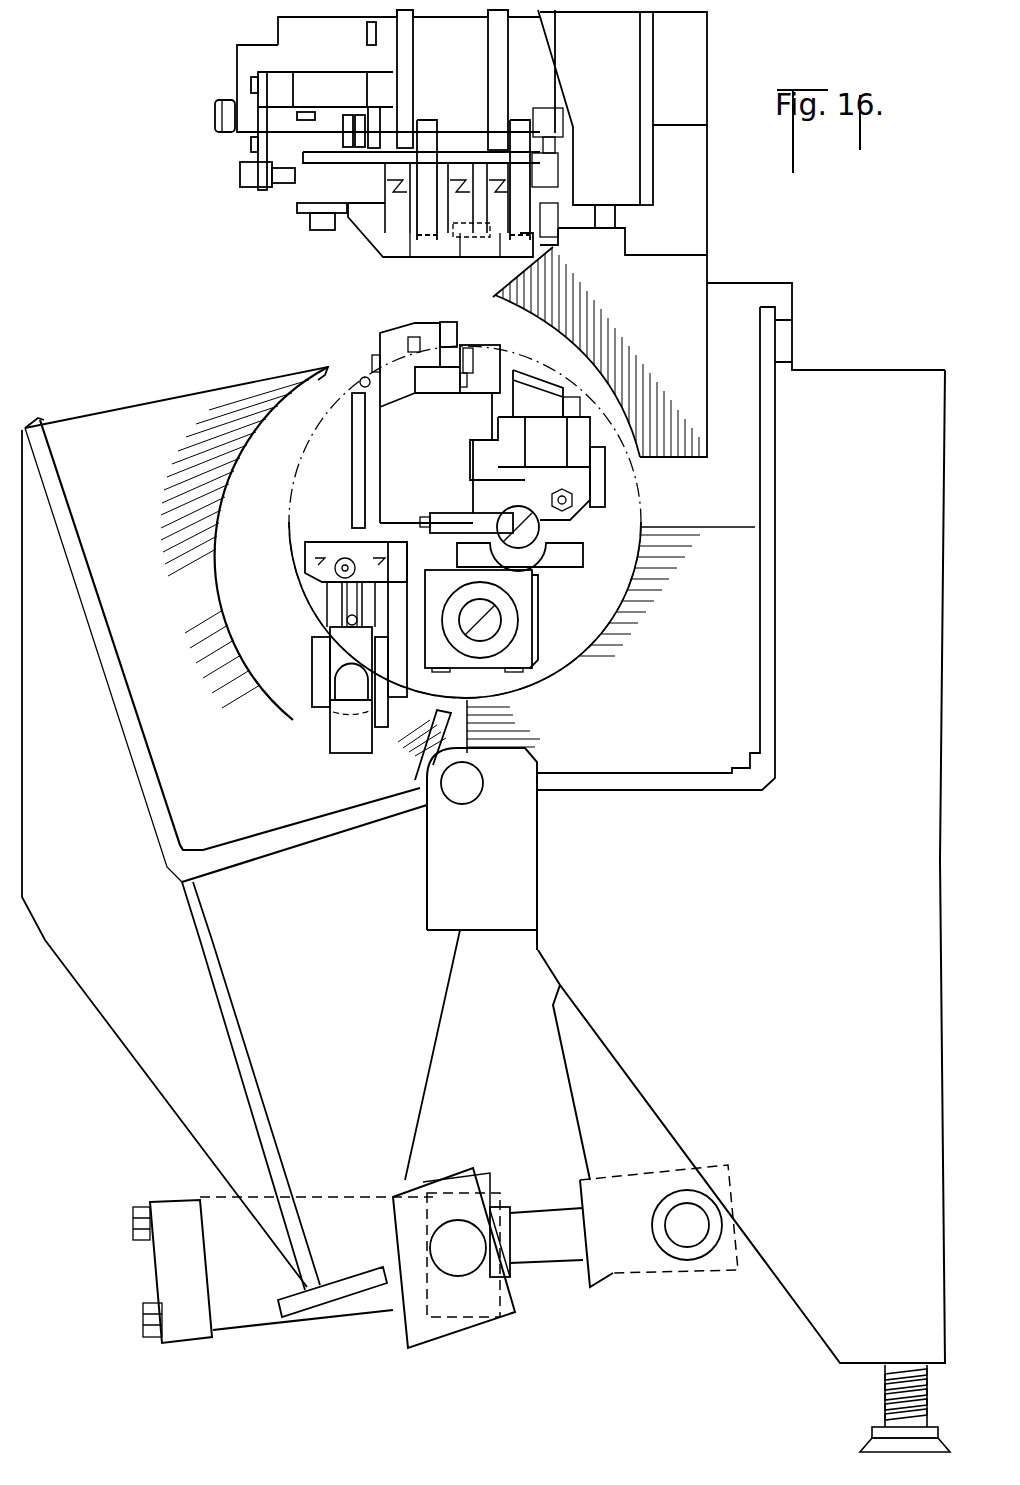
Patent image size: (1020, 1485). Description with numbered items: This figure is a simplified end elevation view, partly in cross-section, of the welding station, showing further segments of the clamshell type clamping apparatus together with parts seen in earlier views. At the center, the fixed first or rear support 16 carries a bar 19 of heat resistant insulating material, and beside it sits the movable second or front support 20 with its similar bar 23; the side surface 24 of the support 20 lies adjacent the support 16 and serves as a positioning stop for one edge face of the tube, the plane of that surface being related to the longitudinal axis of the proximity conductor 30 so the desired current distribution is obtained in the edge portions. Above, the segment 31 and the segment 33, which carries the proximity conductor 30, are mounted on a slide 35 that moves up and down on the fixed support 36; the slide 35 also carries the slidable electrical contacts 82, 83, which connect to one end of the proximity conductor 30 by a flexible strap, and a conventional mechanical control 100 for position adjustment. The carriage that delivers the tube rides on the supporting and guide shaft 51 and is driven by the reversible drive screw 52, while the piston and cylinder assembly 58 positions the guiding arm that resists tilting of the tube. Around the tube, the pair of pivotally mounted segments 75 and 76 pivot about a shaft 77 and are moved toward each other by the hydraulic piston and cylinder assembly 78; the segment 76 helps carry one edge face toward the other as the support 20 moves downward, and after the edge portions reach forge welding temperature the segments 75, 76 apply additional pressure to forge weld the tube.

The first or rear support 16 is at (492, 368).
The bar 19 is at (472, 360).
The second or front support 20 is at (380, 342).
The bar 23 is at (440, 325).
The side surface 24 is at (465, 343).
The proximity conductor 30 is at (463, 260).
The segment 31 is at (695, 272).
The segment 33 is at (365, 228).
The slide 35 is at (607, 217).
The fixed support 36 is at (640, 78).
The supporting and guide shaft 51 is at (535, 540).
The reversible drive screw 52 is at (501, 624).
The piston and cylinder assembly 58 is at (335, 685).
The segment 75 is at (730, 612).
The segment 76 is at (143, 410).
The shaft 77 is at (465, 800).
The hydraulic piston and cylinder assembly 78 is at (247, 1320).
The electrical contact 82 is at (508, 253).
The electrical contact 83 is at (417, 253).
The control 100 is at (214, 135).